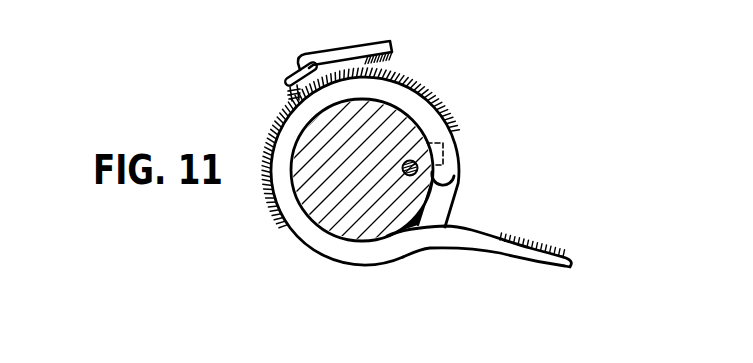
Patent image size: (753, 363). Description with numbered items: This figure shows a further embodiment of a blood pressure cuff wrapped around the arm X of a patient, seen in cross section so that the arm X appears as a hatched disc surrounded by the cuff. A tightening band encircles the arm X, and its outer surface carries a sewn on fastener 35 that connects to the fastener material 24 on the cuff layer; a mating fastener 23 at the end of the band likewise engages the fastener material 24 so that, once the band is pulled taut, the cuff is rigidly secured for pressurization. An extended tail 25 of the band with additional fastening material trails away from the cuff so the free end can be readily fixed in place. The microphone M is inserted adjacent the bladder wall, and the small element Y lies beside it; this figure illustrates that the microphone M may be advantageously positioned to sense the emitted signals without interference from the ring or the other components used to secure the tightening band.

The fastener 23 is at (393, 57).
The fastener material 24 is at (423, 88).
The handle with bristles 25 is at (542, 247).
The sewn on fastener 35 is at (294, 72).
The microphone M is at (452, 141).
The arm X is at (347, 228).
The member Y is at (414, 174).